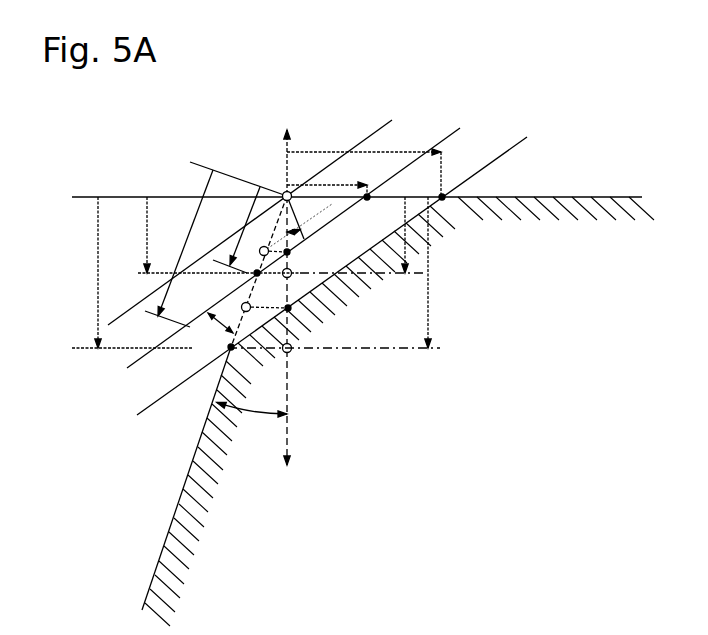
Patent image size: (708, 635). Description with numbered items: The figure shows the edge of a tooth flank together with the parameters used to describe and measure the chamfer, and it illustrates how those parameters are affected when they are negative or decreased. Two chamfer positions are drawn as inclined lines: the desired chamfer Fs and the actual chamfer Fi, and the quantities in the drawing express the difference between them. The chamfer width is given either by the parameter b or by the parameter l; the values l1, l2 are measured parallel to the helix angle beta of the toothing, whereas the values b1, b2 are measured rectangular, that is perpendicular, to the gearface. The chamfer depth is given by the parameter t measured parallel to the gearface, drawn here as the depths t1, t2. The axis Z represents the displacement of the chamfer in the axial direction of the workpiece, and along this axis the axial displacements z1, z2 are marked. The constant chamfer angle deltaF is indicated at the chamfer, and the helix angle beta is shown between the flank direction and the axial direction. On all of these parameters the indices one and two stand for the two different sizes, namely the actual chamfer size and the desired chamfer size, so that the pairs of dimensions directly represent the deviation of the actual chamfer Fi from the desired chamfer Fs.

The desired chamfer Fs is at (395, 368).
The actual chamfer Fi is at (300, 235).
The axial displacement of the chamfer Z is at (292, 307).
The chamfer width measured perpendicular to the gearface b1 is at (269, 235).
The chamfer width measured perpendicular to the gearface b2 is at (251, 272).
The chamfer width measured parallel to the helix angle l1 is at (236, 230).
The chamfer width measured parallel to the helix angle l2 is at (179, 248).
The chamfer depth t1 is at (327, 178).
The chamfer depth t2 is at (364, 162).
The axial displacement of the chamfer z1 is at (393, 237).
The axial displacement of the chamfer z2 is at (413, 275).
The helix angle of the toothing beta is at (252, 422).
The chamfer angle deltaF is at (212, 333).